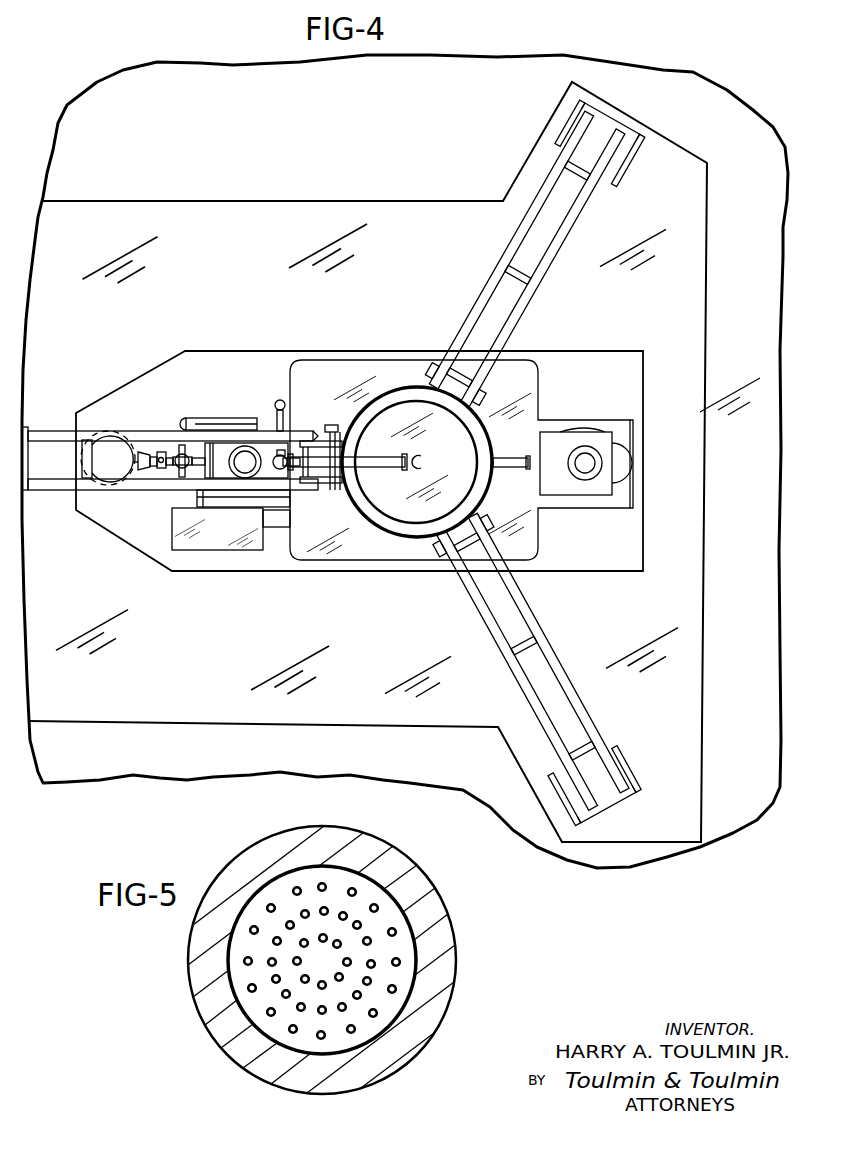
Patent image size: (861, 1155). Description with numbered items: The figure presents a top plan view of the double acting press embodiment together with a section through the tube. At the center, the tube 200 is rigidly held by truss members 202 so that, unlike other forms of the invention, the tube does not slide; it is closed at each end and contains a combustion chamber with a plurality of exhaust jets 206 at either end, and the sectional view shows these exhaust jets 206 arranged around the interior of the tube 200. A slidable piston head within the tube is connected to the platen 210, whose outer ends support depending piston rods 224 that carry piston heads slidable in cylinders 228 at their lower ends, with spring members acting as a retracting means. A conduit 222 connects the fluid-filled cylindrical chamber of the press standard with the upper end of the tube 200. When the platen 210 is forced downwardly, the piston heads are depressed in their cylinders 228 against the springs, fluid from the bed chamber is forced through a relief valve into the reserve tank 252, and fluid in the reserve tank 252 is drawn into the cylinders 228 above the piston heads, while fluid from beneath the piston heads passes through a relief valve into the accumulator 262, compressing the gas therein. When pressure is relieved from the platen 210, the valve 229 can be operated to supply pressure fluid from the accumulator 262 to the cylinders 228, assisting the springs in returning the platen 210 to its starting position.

In FIG. 5, the tube 200 is at (198, 949).
In FIG. 4, the truss members 202 is at (512, 247).
In FIG. 5, the exhaust jets 206 is at (370, 938).
In FIG. 4, the platen 210 is at (363, 372).
In FIG. 4, the conduit 222 is at (387, 463).
In FIG. 4, the piston rods 224 is at (245, 458).
In FIG. 4, the cylinders 228 is at (212, 444).
In FIG. 4, the valve 229 is at (158, 470).
In FIG. 4, the reserve tank 252 is at (215, 540).
In FIG. 4, the accumulator 262 is at (110, 468).